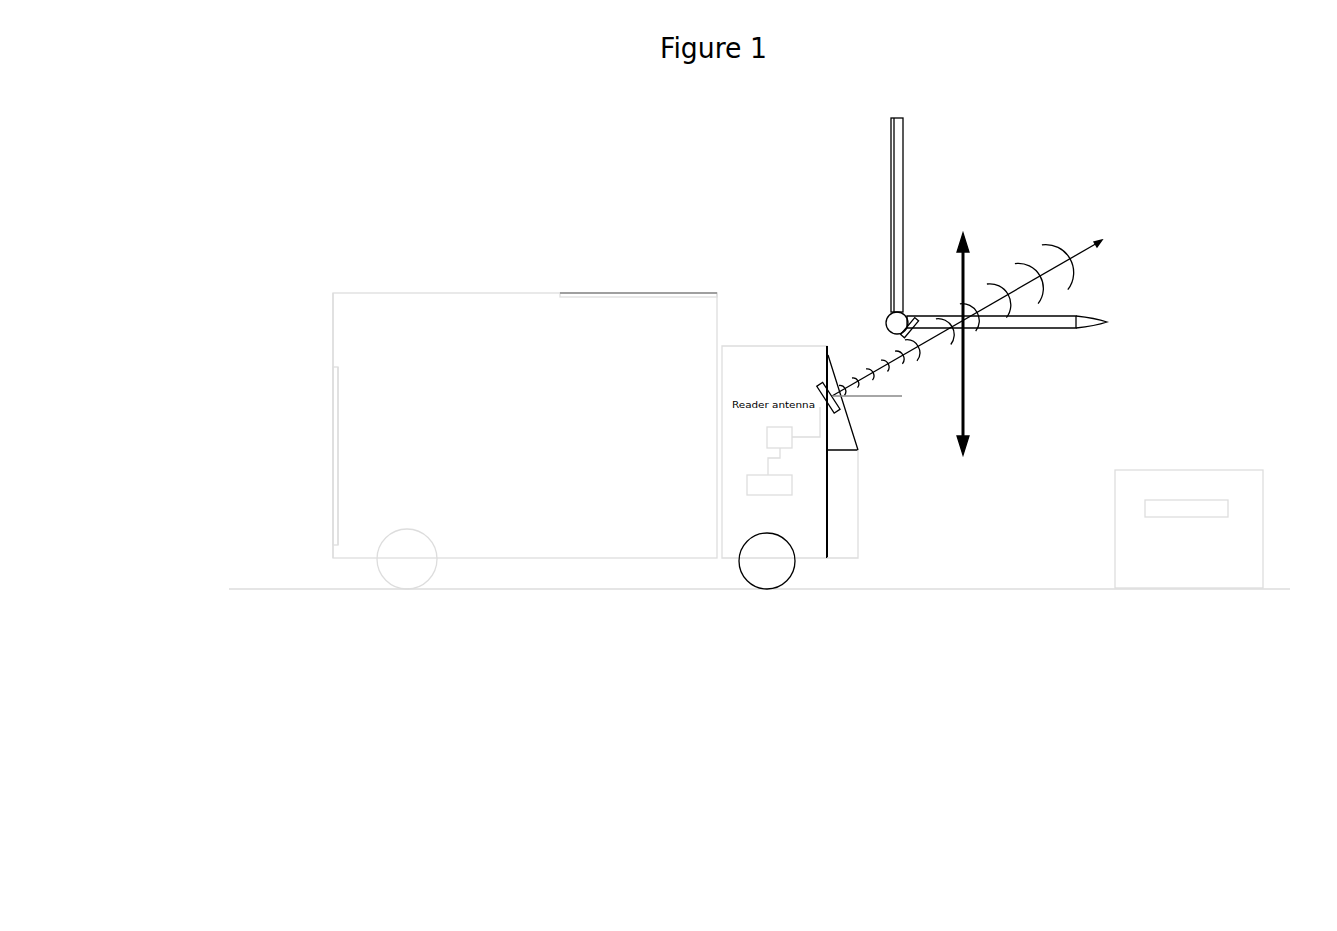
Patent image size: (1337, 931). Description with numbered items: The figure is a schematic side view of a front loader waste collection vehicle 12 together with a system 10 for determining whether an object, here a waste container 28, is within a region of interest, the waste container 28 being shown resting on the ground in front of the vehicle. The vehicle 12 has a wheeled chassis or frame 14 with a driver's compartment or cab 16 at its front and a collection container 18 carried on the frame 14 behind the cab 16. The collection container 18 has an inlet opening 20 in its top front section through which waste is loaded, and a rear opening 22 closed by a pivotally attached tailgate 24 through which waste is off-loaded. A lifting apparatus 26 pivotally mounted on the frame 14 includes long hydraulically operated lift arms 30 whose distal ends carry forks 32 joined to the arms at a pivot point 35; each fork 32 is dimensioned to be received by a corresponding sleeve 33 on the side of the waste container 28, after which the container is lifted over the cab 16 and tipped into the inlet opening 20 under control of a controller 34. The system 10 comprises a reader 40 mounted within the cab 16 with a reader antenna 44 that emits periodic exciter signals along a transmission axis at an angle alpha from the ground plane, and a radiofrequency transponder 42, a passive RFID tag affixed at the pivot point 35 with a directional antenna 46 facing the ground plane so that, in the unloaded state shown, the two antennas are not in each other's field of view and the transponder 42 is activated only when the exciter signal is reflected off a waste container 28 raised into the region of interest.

The system 10 is at (818, 316).
The waste collection vehicle 12 is at (407, 263).
The wheeled chassis or frame 14 is at (525, 559).
The cab 16 is at (772, 346).
The collection container 18 is at (377, 358).
The inlet opening 20 is at (627, 293).
The rear opening 22 is at (333, 502).
The tailgate 24 is at (333, 455).
The lifting apparatus 26 is at (933, 226).
The waste container 28 is at (1138, 530).
The lift arms 30 is at (891, 248).
The forks 32 is at (1020, 328).
The sleeve 33 is at (1187, 500).
The controller 34 is at (780, 485).
The pivot point 35 is at (886, 322).
The reader 40 is at (785, 437).
The radiofrequency transponder 42 is at (917, 335).
The reader antenna 44 is at (847, 408).
The directional antenna 46 is at (912, 318).